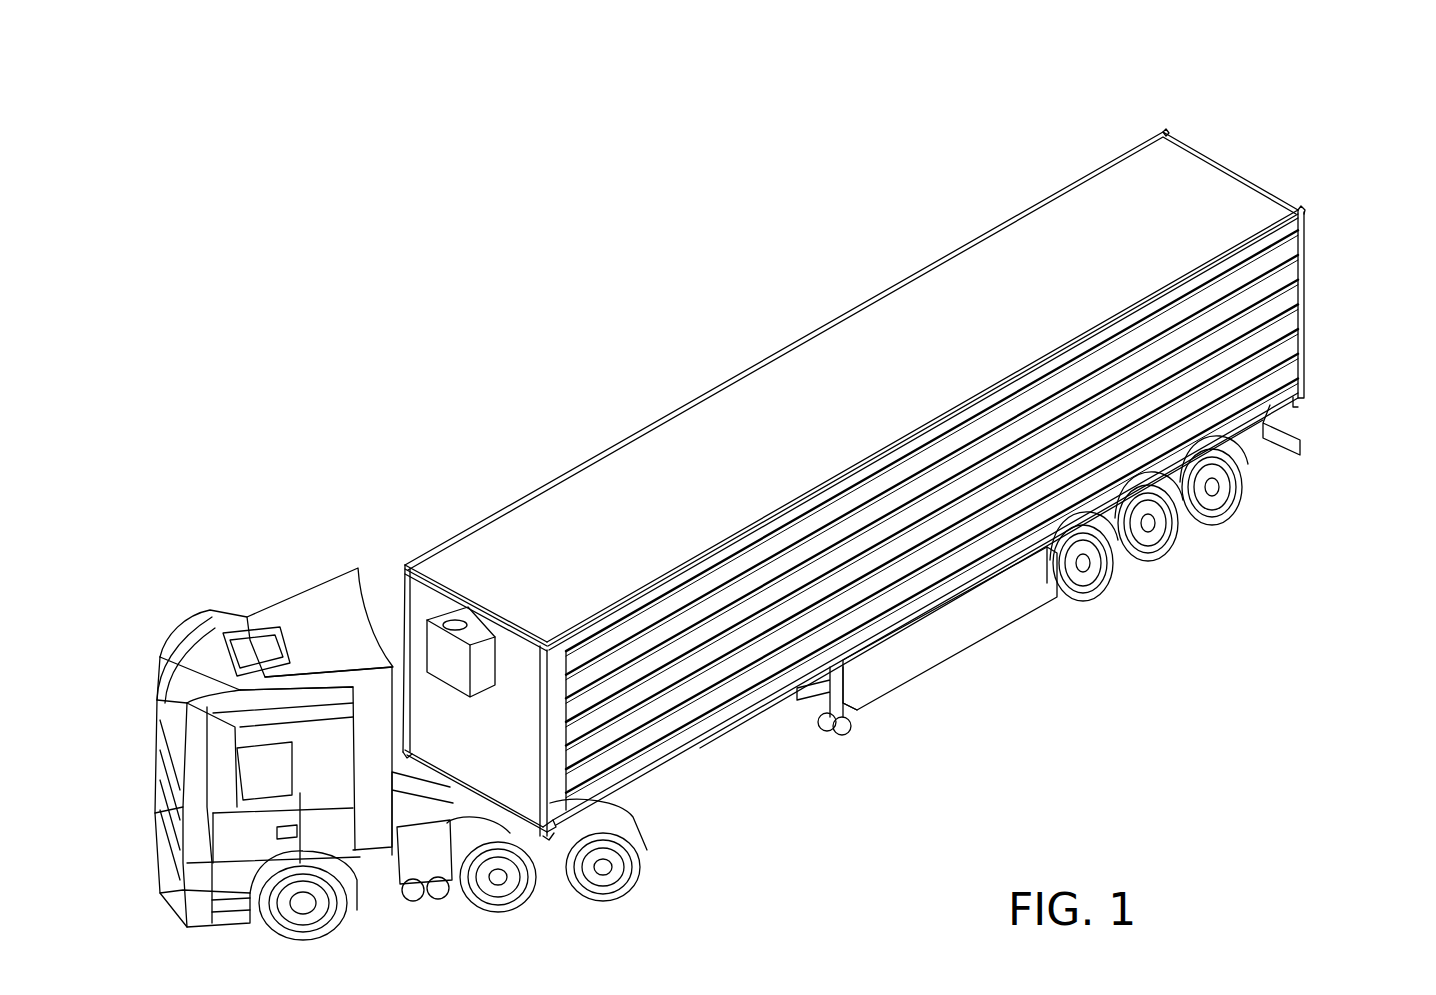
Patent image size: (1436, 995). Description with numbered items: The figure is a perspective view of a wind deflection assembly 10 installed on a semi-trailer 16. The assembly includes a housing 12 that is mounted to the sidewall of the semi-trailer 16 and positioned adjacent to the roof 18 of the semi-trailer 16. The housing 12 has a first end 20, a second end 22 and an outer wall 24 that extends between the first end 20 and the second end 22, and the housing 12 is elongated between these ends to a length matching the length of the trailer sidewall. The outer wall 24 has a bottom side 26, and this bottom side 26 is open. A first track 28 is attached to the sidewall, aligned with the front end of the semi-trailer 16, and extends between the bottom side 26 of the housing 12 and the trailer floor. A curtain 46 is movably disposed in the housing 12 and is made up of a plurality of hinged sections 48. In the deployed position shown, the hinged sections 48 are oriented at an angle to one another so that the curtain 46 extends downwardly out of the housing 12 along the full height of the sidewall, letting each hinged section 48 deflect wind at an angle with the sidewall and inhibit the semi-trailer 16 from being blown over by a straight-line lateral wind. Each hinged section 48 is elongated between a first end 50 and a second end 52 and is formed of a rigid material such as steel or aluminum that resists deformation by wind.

The wind deflection assembly 10 is at (1163, 113).
The housing 12 is at (1143, 318).
The semi-trailer 16 is at (930, 240).
The roof 18 is at (843, 360).
The first end 20 is at (507, 617).
The second end 22 is at (1307, 230).
The outer wall 24 is at (1235, 263).
The bottom side 26 is at (697, 575).
The first track 28 is at (560, 770).
The curtain 46 is at (905, 532).
The hinged sections 48 is at (1297, 363).
The first end 50 is at (572, 775).
The second end 52 is at (1305, 242).